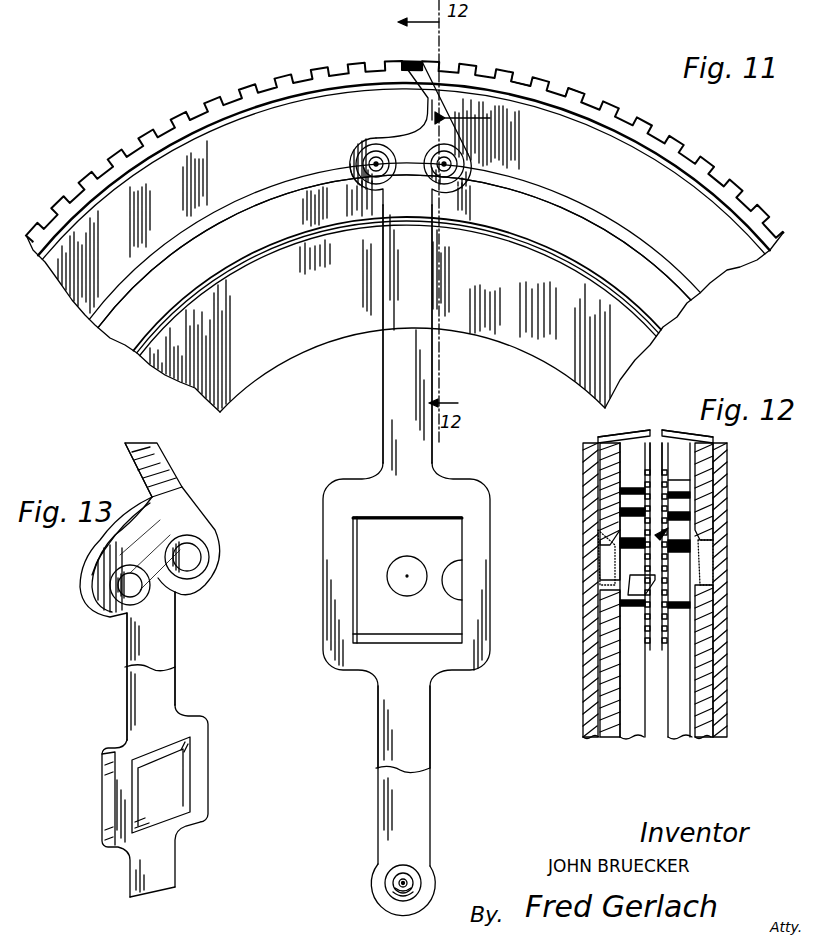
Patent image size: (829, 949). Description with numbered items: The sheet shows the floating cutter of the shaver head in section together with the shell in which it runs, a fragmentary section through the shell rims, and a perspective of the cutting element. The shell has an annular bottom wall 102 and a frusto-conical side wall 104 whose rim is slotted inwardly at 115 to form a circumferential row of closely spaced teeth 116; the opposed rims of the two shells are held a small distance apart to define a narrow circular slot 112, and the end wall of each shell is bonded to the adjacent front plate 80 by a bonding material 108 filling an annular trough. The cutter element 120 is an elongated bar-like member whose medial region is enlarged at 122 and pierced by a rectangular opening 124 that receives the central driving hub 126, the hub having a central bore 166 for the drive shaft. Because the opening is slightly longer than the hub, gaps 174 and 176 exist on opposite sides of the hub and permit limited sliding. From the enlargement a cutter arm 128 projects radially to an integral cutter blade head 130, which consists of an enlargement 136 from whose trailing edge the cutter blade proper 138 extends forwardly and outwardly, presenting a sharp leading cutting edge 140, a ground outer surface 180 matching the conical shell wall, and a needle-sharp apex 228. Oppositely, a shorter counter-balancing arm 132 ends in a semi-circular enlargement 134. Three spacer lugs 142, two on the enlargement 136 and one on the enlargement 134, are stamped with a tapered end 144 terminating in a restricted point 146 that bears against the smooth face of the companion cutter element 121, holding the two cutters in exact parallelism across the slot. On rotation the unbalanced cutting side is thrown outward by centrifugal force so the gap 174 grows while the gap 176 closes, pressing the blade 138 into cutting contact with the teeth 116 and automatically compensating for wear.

In FIG. 12, the front plate 80 is at (590, 702).
In FIG. 11, the bottom wall 102 is at (213, 276).
In FIG. 12, the bottom wall 102 is at (598, 470).
In FIG. 11, the side wall 104 is at (282, 78).
In FIG. 12, the side wall 104 is at (612, 436).
In FIG. 11, the bonding material 108 is at (266, 248).
In FIG. 12, the bonding material 108 is at (604, 567).
In FIG. 12, the circular slot 112 is at (656, 432).
In FIG. 11, the slot 115 is at (565, 96).
In FIG. 12, the slot 115 is at (636, 436).
In FIG. 11, the teeth 116 is at (517, 74).
In FIG. 12, the teeth 116 is at (674, 432).
In FIG. 11, the cutter element 120 is at (376, 386).
In FIG. 12, the cutter element 120 is at (628, 648).
In FIG. 12, the cutter element 121 is at (682, 637).
In FIG. 11, the enlargement 122 is at (476, 506).
In FIG. 13, the enlargement 122 is at (196, 728).
In FIG. 11, the rectangular opening 124 is at (460, 590).
In FIG. 13, the rectangular opening 124 is at (180, 770).
In FIG. 11, the driving hub 126 is at (444, 543).
In FIG. 11, the cutter arm 128 is at (430, 303).
In FIG. 13, the cutter arm 128 is at (177, 640).
In FIG. 11, the cutter blade head 130 is at (410, 177).
In FIG. 13, the cutter blade head 130 is at (102, 612).
In FIG. 11, the counter-balancing arm 132 is at (420, 738).
In FIG. 13, the counter-balancing arm 132 is at (178, 873).
In FIG. 11, the semi-circular enlargement 134 is at (378, 875).
In FIG. 11, the enlargement 136 is at (452, 146).
In FIG. 13, the enlargement 136 is at (160, 578).
In FIG. 11, the cutter blade proper 138 is at (426, 88).
In FIG. 13, the cutter blade proper 138 is at (181, 484).
In FIG. 11, the cutting edge 140 is at (416, 97).
In FIG. 11, the spacer lugs 142 is at (358, 184).
In FIG. 13, the spacer lugs 142 is at (198, 538).
In FIG. 11, the tapered end 144 is at (368, 164).
In FIG. 12, the tapered end 144 is at (662, 535).
In FIG. 11, the restricted point 146 is at (376, 164).
In FIG. 13, the restricted point 146 is at (200, 560).
In FIG. 11, the central bore 166 is at (420, 592).
In FIG. 11, the gap 174 is at (440, 518).
In FIG. 11, the gap 176 is at (364, 646).
In FIG. 11, the outer surface 180 is at (412, 52).
In FIG. 13, the outer surface 180 is at (143, 443).
In FIG. 13, the apex 228 is at (124, 452).